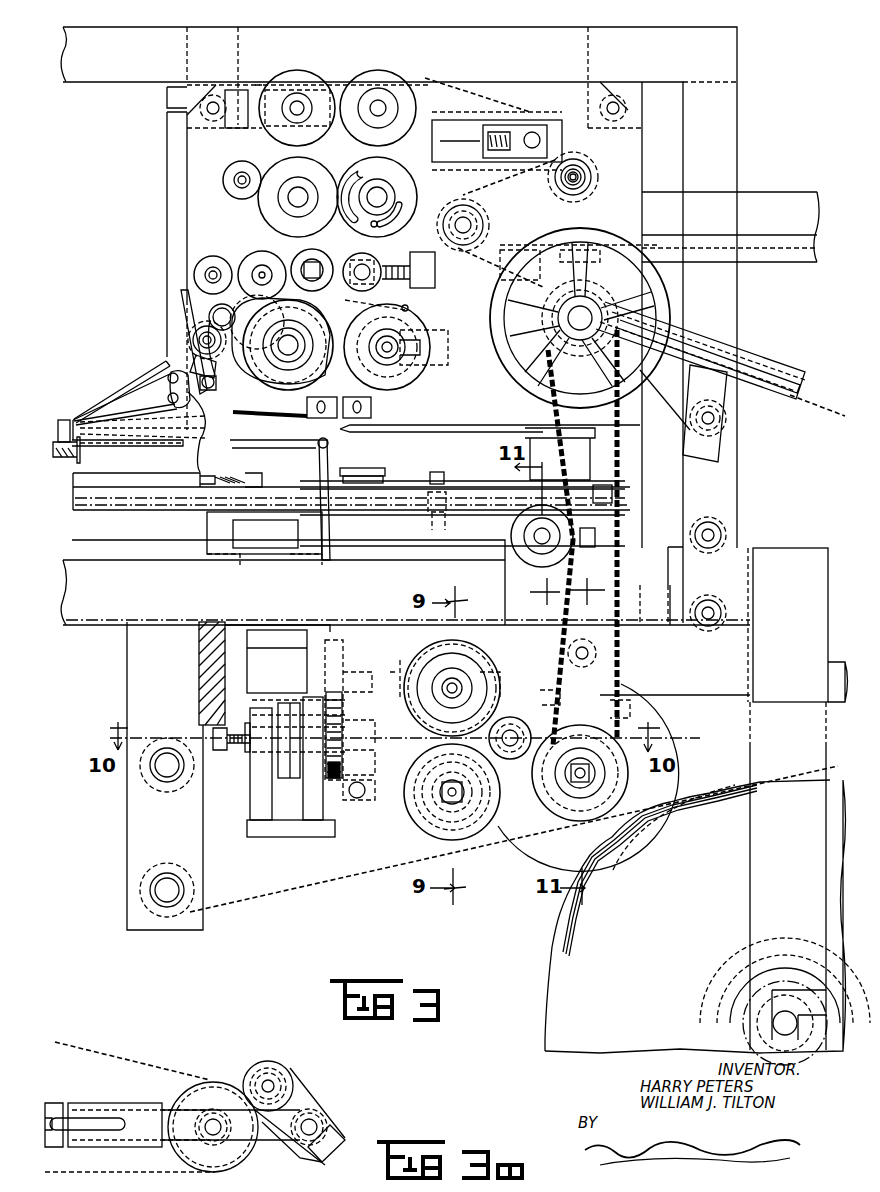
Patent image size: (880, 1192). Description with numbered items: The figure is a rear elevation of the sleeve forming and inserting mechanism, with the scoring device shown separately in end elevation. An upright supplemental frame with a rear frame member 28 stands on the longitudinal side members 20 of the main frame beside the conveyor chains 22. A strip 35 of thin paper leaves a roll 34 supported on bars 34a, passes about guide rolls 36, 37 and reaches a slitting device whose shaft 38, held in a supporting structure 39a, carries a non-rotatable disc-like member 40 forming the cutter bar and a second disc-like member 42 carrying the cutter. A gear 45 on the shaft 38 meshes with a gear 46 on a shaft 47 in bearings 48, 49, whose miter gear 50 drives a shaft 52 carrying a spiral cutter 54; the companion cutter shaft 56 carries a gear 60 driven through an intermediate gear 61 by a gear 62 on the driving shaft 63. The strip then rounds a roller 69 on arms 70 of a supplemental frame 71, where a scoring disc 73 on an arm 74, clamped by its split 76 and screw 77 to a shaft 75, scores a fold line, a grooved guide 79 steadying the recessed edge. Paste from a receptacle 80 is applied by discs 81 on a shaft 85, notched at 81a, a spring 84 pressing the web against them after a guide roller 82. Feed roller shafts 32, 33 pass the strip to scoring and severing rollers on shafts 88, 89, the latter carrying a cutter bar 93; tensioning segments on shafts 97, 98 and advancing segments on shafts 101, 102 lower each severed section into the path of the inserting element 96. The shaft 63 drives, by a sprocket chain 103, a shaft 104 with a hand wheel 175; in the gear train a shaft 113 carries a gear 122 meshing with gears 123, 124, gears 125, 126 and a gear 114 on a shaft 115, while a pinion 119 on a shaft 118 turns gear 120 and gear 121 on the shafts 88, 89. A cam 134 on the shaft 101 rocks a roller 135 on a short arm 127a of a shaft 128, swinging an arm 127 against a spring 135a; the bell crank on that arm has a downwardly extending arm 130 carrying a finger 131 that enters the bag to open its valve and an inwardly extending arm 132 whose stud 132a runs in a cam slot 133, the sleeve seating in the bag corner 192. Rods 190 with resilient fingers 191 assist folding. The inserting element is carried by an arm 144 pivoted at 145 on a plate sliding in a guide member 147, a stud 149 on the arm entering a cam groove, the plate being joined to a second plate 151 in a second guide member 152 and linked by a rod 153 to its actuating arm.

In FIG. 3, the rear frame member 28 is at (525, 95).
In FIG. 3, the shaft 33 is at (298, 108).
In FIG. 3, the shaft 32 is at (380, 106).
In FIG. 3, the cutter bar 93 is at (520, 125).
In FIG. 3, the spring 84 is at (496, 150).
In FIG. 3, the paste applying member 81 is at (580, 165).
In FIG. 3, the shaft 85 is at (580, 175).
In FIG. 3, the peripheral notches 81a is at (596, 178).
In FIG. 3, the receptacle 80 is at (680, 222).
In FIG. 3, the pinion 119 is at (242, 180).
In FIG. 3, the shaft 118 is at (233, 190).
In FIG. 3, the gear 120 is at (270, 204).
In FIG. 3, the gear 122 is at (227, 250).
In FIG. 3, the shaft 89 is at (298, 197).
In FIG. 3, the gear 123 is at (298, 197).
In FIG. 3, the gear 121 is at (392, 167).
In FIG. 3, the shaft 88 is at (378, 197).
In FIG. 3, the shaft 115 is at (200, 268).
In FIG. 3, the gear 114 is at (205, 278).
In FIG. 3, the shaft 113 is at (258, 268).
In FIG. 3, the shaft 98 is at (305, 262).
In FIG. 3, the shaft 97 is at (372, 264).
In FIG. 3, the guide roller 82 is at (484, 224).
In FIG. 3, the strip 35 is at (290, 900).
In FIG. 3A, the strip 35 is at (162, 1068).
In FIG. 3, the spring 135a is at (500, 272).
In FIG. 3, the shaft 102 is at (310, 340).
In FIG. 3, the shaft 101 is at (400, 340).
In FIG. 3, the gear 125 is at (368, 370).
In FIG. 3, the gear 126 is at (440, 365).
In FIG. 3, the gear 124 is at (412, 303).
In FIG. 3, the cam 134 is at (232, 305).
In FIG. 3, the shaft 128 is at (210, 314).
In FIG. 3, the roller 135 is at (200, 335).
In FIG. 3, the short arm 127a is at (200, 342).
In FIG. 3, the arm 127 is at (200, 358).
In FIG. 3, the downwardly extending arm 130 is at (195, 425).
In FIG. 3, the inwardly extending arm 132 is at (168, 368).
In FIG. 3, the finger 131 is at (165, 404).
In FIG. 3, the corner portion of the bag 192 is at (85, 412).
In FIG. 3, the parallel chains 22 is at (55, 445).
In FIG. 3, the stud 132a is at (222, 395).
In FIG. 3, the cam slot 133 is at (280, 390).
In FIG. 3, the shaft 104 is at (580, 340).
In FIG. 3, the sprocket chain 103 is at (620, 512).
In FIG. 3, the grooved guide 79 is at (783, 380).
In FIG. 3, the hand wheel 175 is at (628, 388).
In FIG. 3, the sleeve inserting element 96 is at (452, 432).
In FIG. 3, the arm 144 is at (445, 482).
In FIG. 3, the pivot 145 is at (355, 470).
In FIG. 3, the guide member 147 is at (425, 505).
In FIG. 3, the stud 149 is at (436, 512).
In FIG. 3, the rods 190 is at (328, 455).
In FIG. 3, the resilient fingers 191 is at (265, 445).
In FIG. 3, the rod 153 is at (90, 486).
In FIG. 3, the second guide member 152 is at (215, 560).
In FIG. 3, the second plate 151 is at (250, 548).
In FIG. 3, the longitudinal side members 20 is at (199, 672).
In FIG. 3, the guide roll 37 is at (165, 784).
In FIG. 3, the guide roll 36 is at (190, 895).
In FIG. 3, the gear 46 is at (300, 672).
In FIG. 3, the bearing 48 is at (335, 668).
In FIG. 3, the shaft 47 is at (350, 680).
In FIG. 3, the spiral cutter 54 is at (425, 655).
In FIG. 3, the shaft 52 is at (455, 686).
In FIG. 3, the miter gear 50 is at (475, 680).
In FIG. 3, the bearing 49 is at (570, 652).
In FIG. 3, the intermediate gear 61 is at (512, 762).
In FIG. 3, the gear 60 is at (420, 818).
In FIG. 3, the shaft 56 is at (450, 800).
In FIG. 3, the gear 62 is at (628, 790).
In FIG. 3, the shaft 63 is at (570, 785).
In FIG. 3, the shaft 38 is at (235, 742).
In FIG. 3, the non-rotatable disc-like member 40 is at (262, 766).
In FIG. 3, the second disc-like member 42 is at (286, 755).
In FIG. 3, the gear 45 is at (300, 805).
In FIG. 3, the supporting structure 39a is at (330, 832).
In FIG. 3, the supplemental frame 71 is at (688, 686).
In FIG. 3, the arms 70 is at (790, 665).
In FIG. 3A, the arms 70 is at (125, 1108).
In FIG. 3, the bars 34a is at (760, 888).
In FIG. 3, the roll 34 is at (562, 1010).
In FIG. 3A, the roller 69 is at (215, 1090).
In FIG. 3A, the scoring disc 73 is at (288, 1072).
In FIG. 3A, the arm 74 is at (298, 1098).
In FIG. 3A, the split 76 is at (318, 1135).
In FIG. 3A, the screw 77 is at (340, 1128).
In FIG. 3A, the shaft 75 is at (302, 1150).